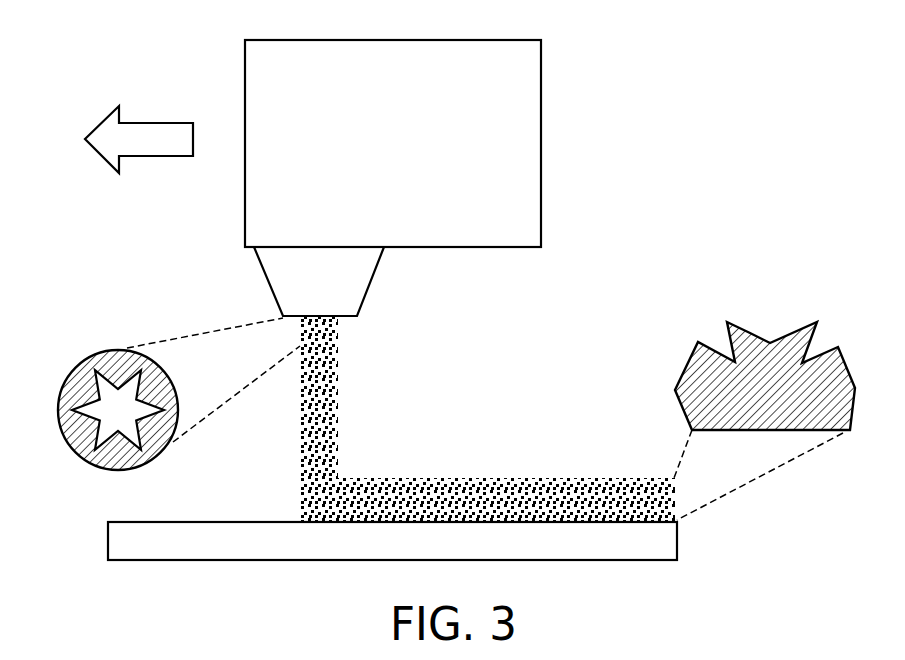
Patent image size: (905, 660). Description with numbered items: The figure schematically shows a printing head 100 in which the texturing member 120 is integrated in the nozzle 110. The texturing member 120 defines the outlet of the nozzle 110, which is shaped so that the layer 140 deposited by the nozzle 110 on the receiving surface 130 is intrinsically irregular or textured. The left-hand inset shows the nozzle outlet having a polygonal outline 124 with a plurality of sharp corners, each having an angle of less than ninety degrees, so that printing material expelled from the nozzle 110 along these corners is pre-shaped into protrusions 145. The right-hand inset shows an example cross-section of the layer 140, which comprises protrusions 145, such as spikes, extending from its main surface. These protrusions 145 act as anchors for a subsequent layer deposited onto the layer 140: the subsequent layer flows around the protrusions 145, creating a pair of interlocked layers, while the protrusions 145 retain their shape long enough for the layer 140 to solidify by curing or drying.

The printing head 100 is at (542, 173).
The nozzle 110 is at (372, 283).
The texturing member 120 is at (103, 350).
The polygonal outline 124 is at (105, 440).
The receiving surface 130 is at (667, 537).
The layer 140 is at (587, 487).
The protrusions 145 is at (755, 342).